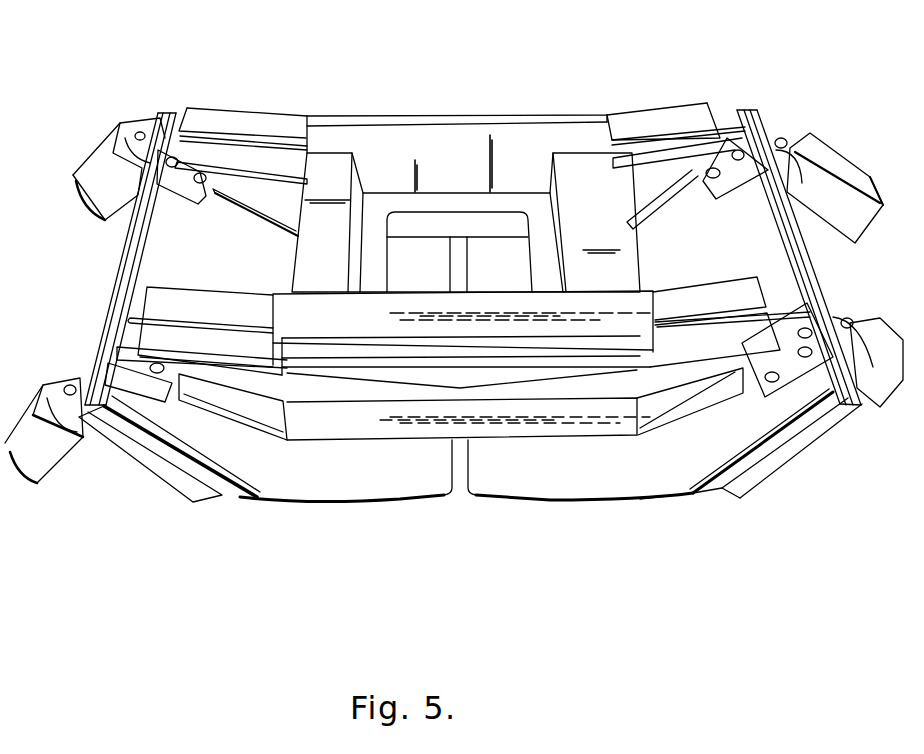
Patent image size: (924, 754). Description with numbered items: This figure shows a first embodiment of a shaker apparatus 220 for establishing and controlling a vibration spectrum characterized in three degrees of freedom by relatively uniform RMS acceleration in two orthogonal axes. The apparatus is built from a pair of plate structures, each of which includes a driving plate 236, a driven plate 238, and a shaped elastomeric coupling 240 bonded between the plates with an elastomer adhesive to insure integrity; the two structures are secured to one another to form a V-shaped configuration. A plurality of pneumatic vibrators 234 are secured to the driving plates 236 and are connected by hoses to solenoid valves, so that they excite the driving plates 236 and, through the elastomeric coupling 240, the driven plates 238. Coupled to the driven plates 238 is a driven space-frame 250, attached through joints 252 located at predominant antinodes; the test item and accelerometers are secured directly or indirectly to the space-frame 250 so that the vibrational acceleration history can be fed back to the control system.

The shaker apparatus 220 is at (550, 68).
The driven space-frame 250 is at (683, 104).
The joints 252 is at (730, 127).
The pneumatic vibrators 234 is at (820, 152).
The driving plate 236 is at (770, 467).
The driven plate 238 is at (698, 490).
The shaped elastomeric coupling 240 is at (723, 490).